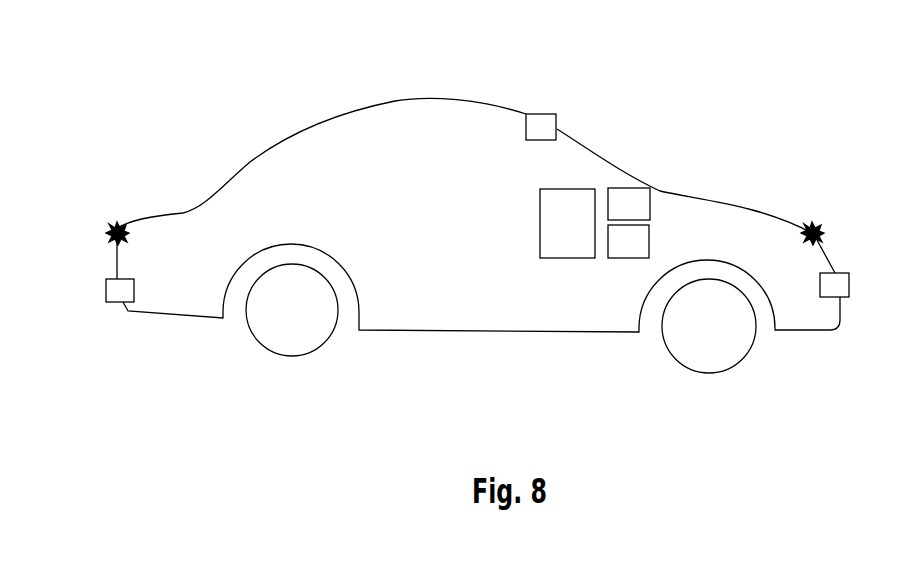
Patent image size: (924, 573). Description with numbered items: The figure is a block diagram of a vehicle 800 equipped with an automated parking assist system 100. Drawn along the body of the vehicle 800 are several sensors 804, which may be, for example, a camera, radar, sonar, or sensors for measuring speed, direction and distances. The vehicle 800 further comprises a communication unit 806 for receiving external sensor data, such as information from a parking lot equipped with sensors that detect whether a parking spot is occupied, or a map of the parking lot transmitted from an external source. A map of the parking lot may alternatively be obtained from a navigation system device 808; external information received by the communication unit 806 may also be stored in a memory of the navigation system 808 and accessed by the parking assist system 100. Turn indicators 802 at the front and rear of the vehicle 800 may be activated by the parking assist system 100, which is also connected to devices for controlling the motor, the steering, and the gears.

The vehicle 800 is at (245, 167).
The turn indicators 802 is at (113, 222).
The sensors 804 is at (123, 303).
The communication unit 806 is at (618, 188).
The navigation system device 808 is at (650, 230).
The automated parking assist system 100 is at (540, 228).